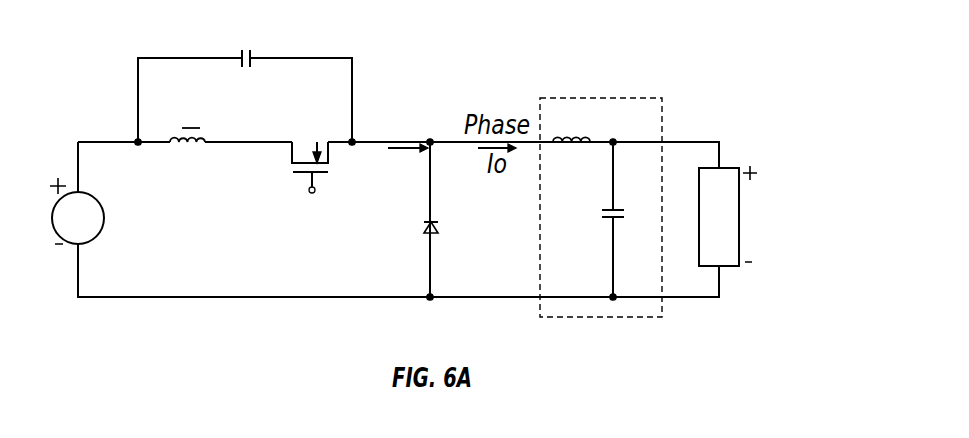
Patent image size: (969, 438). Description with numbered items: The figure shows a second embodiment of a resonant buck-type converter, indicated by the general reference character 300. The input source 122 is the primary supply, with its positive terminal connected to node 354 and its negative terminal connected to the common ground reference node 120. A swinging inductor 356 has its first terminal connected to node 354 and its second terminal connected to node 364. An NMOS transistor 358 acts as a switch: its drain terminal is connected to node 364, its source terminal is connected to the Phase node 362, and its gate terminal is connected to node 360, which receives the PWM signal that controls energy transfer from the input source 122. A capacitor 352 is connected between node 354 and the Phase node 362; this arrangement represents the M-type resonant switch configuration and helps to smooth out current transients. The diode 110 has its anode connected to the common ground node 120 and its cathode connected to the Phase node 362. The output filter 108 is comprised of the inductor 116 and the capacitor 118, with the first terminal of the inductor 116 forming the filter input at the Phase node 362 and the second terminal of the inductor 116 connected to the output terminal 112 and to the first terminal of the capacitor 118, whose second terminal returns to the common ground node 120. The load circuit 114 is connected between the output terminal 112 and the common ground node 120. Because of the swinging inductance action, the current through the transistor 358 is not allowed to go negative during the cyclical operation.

The circuit 300 is at (655, 48).
The node 354 is at (101, 141).
The input source 122 is at (103, 225).
The common ground reference node 120 is at (167, 298).
The swinging inductor 356 is at (189, 143).
The capacitor 352 is at (252, 61).
The node 364 is at (258, 141).
The NMOS transistor 358 is at (330, 155).
The node 360 is at (310, 195).
The Phase node 362 is at (385, 141).
The diode 110 is at (435, 228).
The output filter 108 is at (635, 98).
The inductor 116 is at (571, 147).
The capacitor 118 is at (609, 221).
The output terminal 112 is at (718, 139).
The load circuit 114 is at (740, 228).